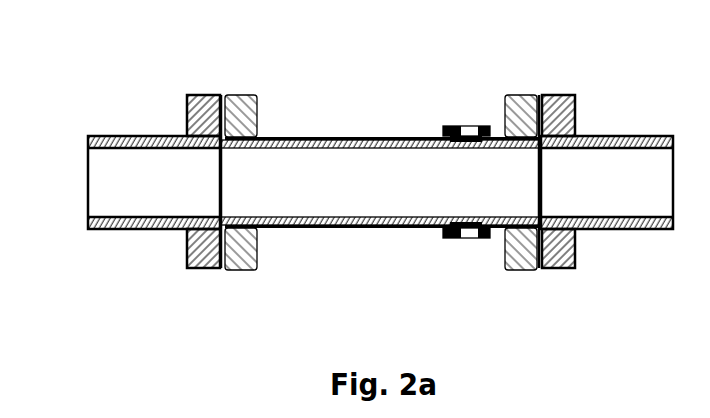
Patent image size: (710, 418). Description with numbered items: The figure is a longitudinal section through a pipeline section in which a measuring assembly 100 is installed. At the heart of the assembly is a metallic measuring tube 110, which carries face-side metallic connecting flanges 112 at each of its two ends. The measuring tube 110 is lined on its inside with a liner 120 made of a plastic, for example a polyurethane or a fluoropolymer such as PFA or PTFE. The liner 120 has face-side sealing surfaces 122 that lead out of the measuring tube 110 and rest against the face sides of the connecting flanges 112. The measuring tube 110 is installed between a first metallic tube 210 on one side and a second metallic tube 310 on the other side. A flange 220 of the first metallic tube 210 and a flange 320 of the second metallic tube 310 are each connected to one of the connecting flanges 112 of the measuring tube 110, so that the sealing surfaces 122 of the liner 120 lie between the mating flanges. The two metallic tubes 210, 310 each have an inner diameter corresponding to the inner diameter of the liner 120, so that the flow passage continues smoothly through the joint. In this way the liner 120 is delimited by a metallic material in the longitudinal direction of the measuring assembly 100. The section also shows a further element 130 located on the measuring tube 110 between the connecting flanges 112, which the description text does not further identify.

The measuring assembly 100 is at (283, 47).
The measuring tube 110 is at (315, 138).
The connecting flanges 112 is at (247, 96).
The liner 120 is at (286, 148).
The sealing surfaces 122 is at (538, 96).
The sensor element 130 is at (453, 125).
The first metallic tube 210 is at (135, 136).
The flange 220 is at (202, 96).
The second metallic tube 310 is at (598, 137).
The flange 320 is at (563, 96).